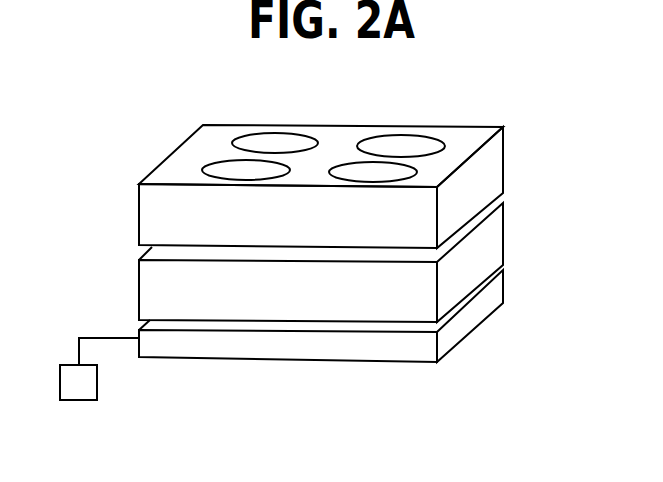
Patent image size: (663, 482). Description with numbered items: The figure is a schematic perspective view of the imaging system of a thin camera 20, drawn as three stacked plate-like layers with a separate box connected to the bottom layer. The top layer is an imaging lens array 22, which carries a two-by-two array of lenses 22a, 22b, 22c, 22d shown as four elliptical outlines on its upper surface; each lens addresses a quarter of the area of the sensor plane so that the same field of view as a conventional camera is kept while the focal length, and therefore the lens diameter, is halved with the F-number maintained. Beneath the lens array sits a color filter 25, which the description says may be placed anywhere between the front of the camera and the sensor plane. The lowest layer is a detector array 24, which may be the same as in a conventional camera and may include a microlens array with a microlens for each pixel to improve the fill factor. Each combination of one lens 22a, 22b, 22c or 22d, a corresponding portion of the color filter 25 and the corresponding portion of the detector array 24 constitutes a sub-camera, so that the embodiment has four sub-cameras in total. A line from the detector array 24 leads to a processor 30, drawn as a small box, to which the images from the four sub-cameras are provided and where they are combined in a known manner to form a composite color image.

The thin camera 20 is at (189, 88).
The imaging lens array 22 is at (206, 139).
The lens 22a is at (274, 134).
The lens 22b is at (400, 136).
The lens 22c is at (203, 170).
The lens 22d is at (417, 172).
The color filter 25 is at (122, 242).
The detector array 24 is at (391, 375).
The processor 30 is at (60, 376).